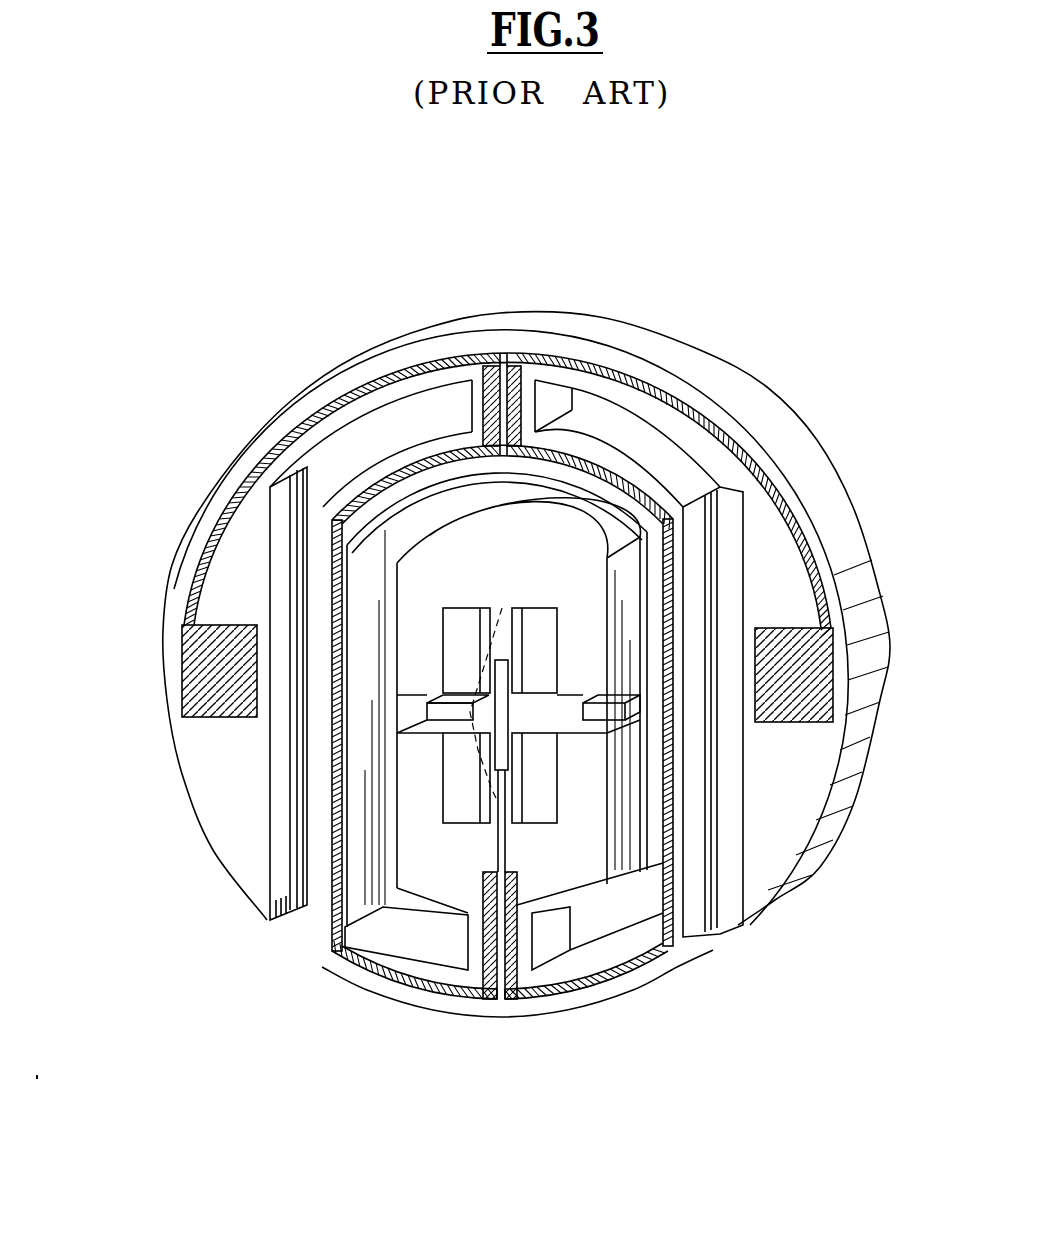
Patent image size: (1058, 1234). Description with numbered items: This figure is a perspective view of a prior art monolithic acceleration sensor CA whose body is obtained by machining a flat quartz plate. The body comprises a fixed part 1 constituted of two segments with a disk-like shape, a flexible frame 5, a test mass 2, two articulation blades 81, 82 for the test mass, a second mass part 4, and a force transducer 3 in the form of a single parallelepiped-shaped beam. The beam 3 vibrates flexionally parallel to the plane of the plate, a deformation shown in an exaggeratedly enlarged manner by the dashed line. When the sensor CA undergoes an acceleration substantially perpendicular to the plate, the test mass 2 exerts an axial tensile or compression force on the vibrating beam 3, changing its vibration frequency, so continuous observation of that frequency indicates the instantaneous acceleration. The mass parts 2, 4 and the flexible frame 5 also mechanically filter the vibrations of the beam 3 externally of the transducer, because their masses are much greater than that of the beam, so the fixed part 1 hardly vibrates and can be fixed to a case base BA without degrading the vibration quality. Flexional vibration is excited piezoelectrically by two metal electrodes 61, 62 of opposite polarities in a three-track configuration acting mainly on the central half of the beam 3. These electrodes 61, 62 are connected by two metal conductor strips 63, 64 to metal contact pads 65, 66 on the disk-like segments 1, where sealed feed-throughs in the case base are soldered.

The fixed part 1 is at (213, 802).
The test mass 2 is at (440, 572).
The force transducer 3 is at (520, 748).
The second mass part 4 is at (625, 873).
The flexible frame 5 is at (615, 1027).
The metal electrode 61 is at (497, 841).
The metal electrode 62 is at (512, 850).
The metal conductor strip 63 is at (483, 892).
The metal conductor strip 64 is at (517, 897).
The metal contact pad 65 is at (225, 697).
The metal contact pad 66 is at (813, 687).
The articulation blade 81 is at (438, 707).
The articulation blade 82 is at (598, 707).
The acceleration sensor CA is at (373, 318).
The case base BA is at (203, 908).